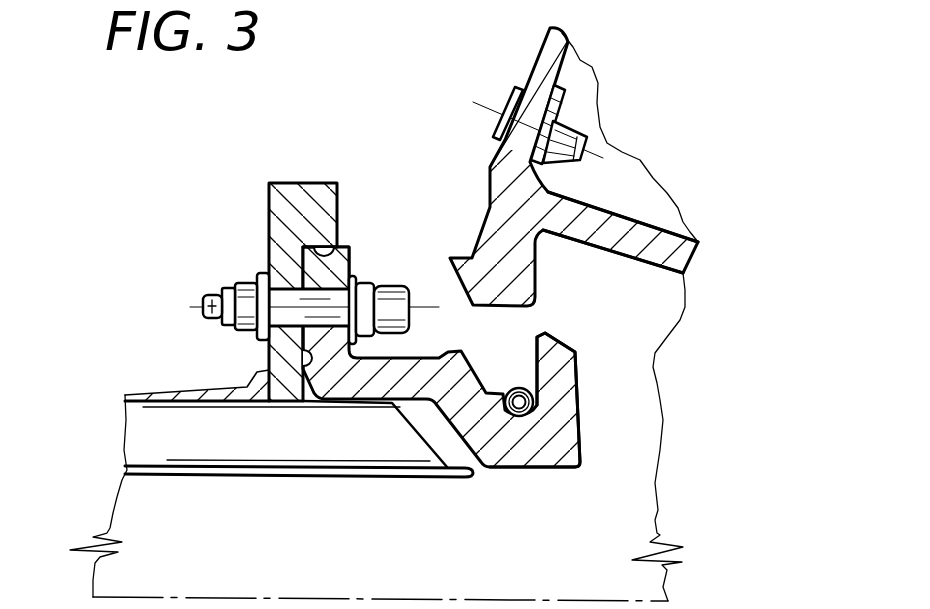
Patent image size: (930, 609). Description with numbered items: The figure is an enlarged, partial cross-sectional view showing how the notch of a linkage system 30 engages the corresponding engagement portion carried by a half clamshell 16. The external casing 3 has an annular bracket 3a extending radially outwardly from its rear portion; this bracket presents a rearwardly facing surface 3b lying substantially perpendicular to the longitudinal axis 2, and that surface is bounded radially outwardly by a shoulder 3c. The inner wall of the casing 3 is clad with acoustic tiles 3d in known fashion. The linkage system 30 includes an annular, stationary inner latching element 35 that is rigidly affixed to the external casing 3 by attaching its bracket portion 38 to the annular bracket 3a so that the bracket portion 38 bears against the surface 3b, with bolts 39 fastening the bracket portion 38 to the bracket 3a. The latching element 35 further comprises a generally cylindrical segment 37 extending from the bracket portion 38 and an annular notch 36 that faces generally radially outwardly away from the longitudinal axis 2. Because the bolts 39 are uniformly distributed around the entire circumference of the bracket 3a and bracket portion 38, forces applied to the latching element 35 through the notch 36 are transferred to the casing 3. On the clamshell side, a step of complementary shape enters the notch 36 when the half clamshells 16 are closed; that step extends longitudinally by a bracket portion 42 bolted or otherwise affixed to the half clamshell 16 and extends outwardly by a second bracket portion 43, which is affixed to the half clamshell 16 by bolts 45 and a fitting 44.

The longitudinal axis 2 is at (267, 598).
The external casing 3 is at (165, 393).
The annular bracket 3a is at (343, 193).
The rearwardly facing surface 3b is at (302, 360).
The shoulder 3c is at (345, 252).
The acoustic tiles 3d is at (145, 436).
The half clamshell 16 is at (677, 144).
The linkage system 30 is at (614, 458).
The inner latching element 35 is at (582, 405).
The annular notch 36 is at (512, 370).
The cylindrical segment 37 is at (411, 357).
The bracket portion 38 is at (351, 264).
The bolts 39 is at (213, 296).
The bracket portion 42 is at (690, 252).
The second bracket portion 43 is at (566, 92).
The fitting 44 is at (550, 54).
The bolts 45 is at (563, 157).